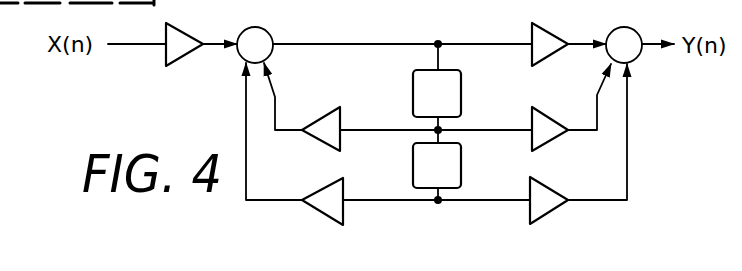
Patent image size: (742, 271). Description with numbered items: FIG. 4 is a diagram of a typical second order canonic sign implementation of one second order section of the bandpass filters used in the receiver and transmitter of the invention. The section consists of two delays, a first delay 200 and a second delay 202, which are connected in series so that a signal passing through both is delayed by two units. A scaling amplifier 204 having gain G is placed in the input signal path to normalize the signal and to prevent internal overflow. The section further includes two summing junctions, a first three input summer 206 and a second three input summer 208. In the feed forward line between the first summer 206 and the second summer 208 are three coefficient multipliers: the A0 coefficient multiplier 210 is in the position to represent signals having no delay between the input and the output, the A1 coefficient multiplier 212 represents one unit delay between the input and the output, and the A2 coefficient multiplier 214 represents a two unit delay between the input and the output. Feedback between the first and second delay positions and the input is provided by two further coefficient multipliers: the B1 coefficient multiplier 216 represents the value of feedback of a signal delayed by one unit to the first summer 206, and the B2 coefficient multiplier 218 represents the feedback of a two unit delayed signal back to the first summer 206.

The first delay 200 is at (461, 101).
The second delay 202 is at (462, 181).
The scaling amplifier 204 is at (172, 24).
The first three input summer 206 is at (265, 32).
The second three input summer 208 is at (645, 27).
The A0 coefficient multiplier 210 is at (557, 27).
The A1 coefficient multiplier 212 is at (560, 113).
The A2 coefficient multiplier 214 is at (566, 192).
The B1 coefficient multiplier 216 is at (312, 121).
The B2 coefficient multiplier 218 is at (325, 185).